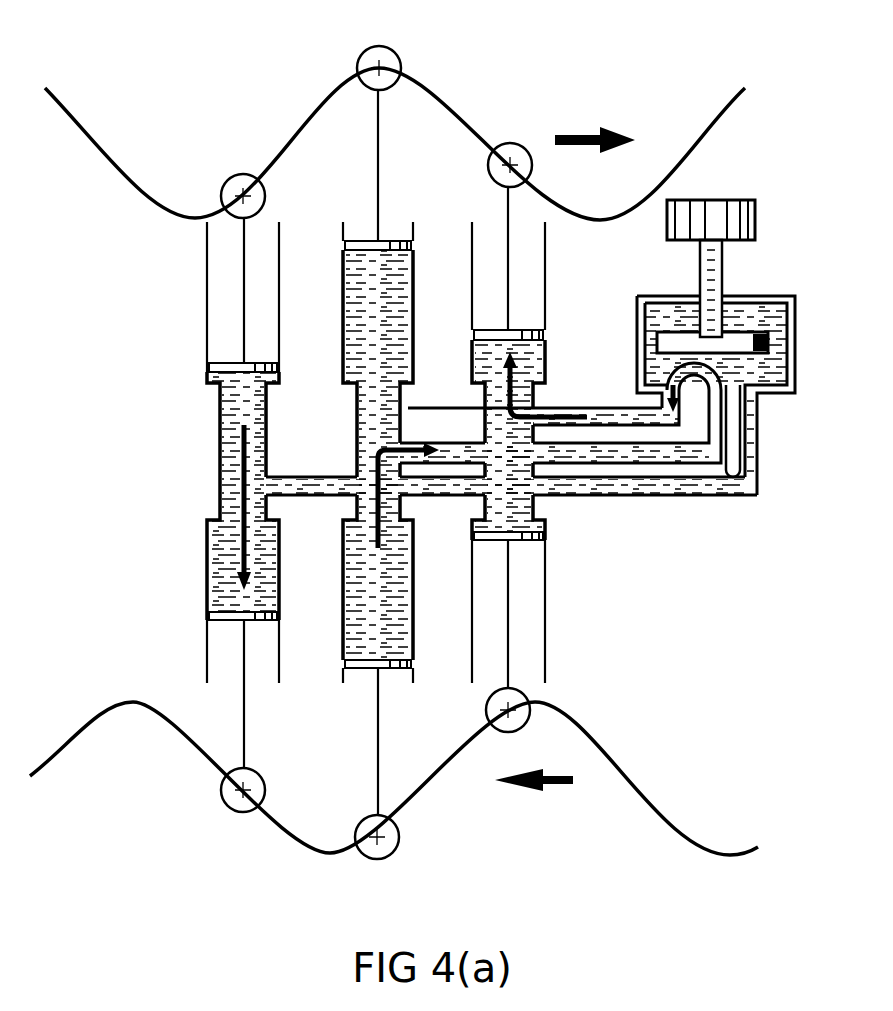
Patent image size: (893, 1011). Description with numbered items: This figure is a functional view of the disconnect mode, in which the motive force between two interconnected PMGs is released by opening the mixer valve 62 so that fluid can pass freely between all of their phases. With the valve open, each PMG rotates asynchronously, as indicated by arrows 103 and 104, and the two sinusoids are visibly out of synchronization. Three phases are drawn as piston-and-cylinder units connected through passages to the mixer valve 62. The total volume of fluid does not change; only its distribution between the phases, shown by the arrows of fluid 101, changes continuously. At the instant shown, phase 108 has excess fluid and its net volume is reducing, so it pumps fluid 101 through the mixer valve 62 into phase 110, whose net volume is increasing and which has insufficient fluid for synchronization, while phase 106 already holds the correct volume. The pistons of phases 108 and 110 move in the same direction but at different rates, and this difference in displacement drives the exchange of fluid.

The arrow 103 is at (597, 118).
The arrow 104 is at (560, 765).
The phase 106 is at (212, 417).
The phase 108 is at (353, 422).
The phase 110 is at (548, 360).
The mixer valve 62 is at (800, 335).
The fluid 101 is at (385, 537).